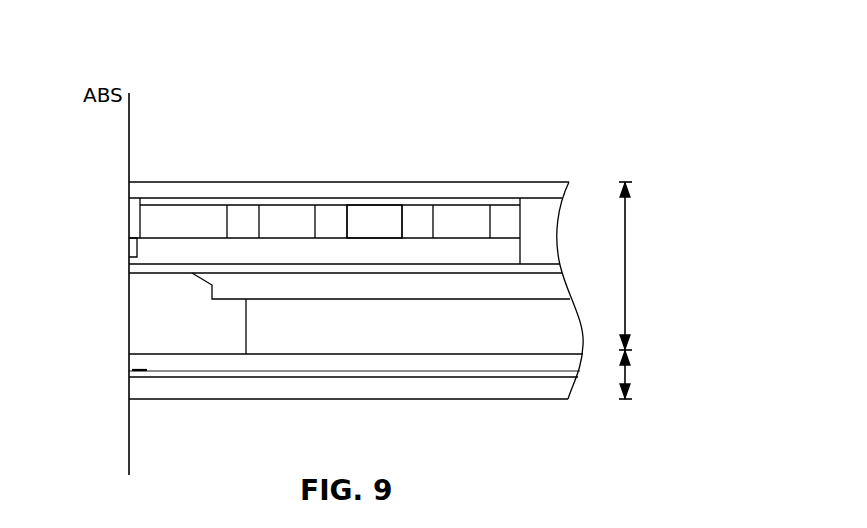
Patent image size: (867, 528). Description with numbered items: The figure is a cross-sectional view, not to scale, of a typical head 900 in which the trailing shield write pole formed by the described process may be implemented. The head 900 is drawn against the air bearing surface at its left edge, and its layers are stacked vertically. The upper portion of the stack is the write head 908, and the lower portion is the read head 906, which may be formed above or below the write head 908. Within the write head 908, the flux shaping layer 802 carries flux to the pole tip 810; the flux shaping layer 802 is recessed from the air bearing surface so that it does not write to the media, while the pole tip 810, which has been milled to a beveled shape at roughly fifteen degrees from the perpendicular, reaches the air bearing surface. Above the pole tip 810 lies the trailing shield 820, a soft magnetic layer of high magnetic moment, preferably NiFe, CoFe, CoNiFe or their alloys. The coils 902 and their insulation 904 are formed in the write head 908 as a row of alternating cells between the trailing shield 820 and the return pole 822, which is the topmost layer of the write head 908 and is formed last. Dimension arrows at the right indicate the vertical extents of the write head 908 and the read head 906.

The head 900 is at (446, 113).
The coils 902 is at (260, 214).
The insulation 904 is at (375, 208).
The return pole 822 is at (129, 193).
The trailing shield 820 is at (129, 250).
The pole tip 810 is at (129, 272).
The flux shaping layer 802 is at (212, 293).
The write head 908 is at (680, 266).
The read head 906 is at (680, 373).